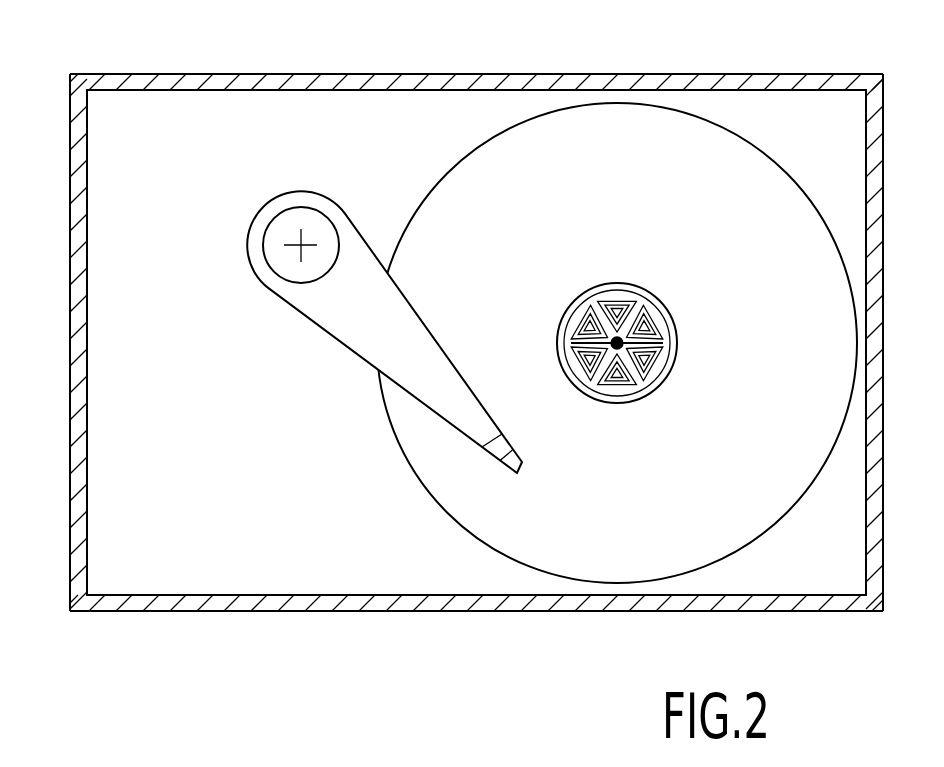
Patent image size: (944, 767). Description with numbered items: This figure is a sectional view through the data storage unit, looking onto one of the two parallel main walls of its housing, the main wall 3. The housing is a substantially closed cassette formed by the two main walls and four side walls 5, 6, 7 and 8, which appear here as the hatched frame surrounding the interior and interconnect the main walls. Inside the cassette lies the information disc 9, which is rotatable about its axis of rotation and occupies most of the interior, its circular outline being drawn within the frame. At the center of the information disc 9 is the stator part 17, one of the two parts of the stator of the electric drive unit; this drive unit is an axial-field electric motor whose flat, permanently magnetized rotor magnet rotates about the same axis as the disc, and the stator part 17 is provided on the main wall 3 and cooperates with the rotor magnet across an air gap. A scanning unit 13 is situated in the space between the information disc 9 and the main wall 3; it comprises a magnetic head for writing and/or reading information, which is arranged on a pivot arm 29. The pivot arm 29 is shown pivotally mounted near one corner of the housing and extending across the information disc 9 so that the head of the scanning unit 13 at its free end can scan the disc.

The main wall 3 is at (155, 110).
The side wall 5 is at (373, 84).
The side wall 6 is at (870, 306).
The side wall 7 is at (380, 603).
The side wall 8 is at (78, 302).
The information disc 9 is at (458, 178).
The scanning unit 13 is at (522, 468).
The stator part 17 is at (615, 290).
The pivot arm 29 is at (345, 325).